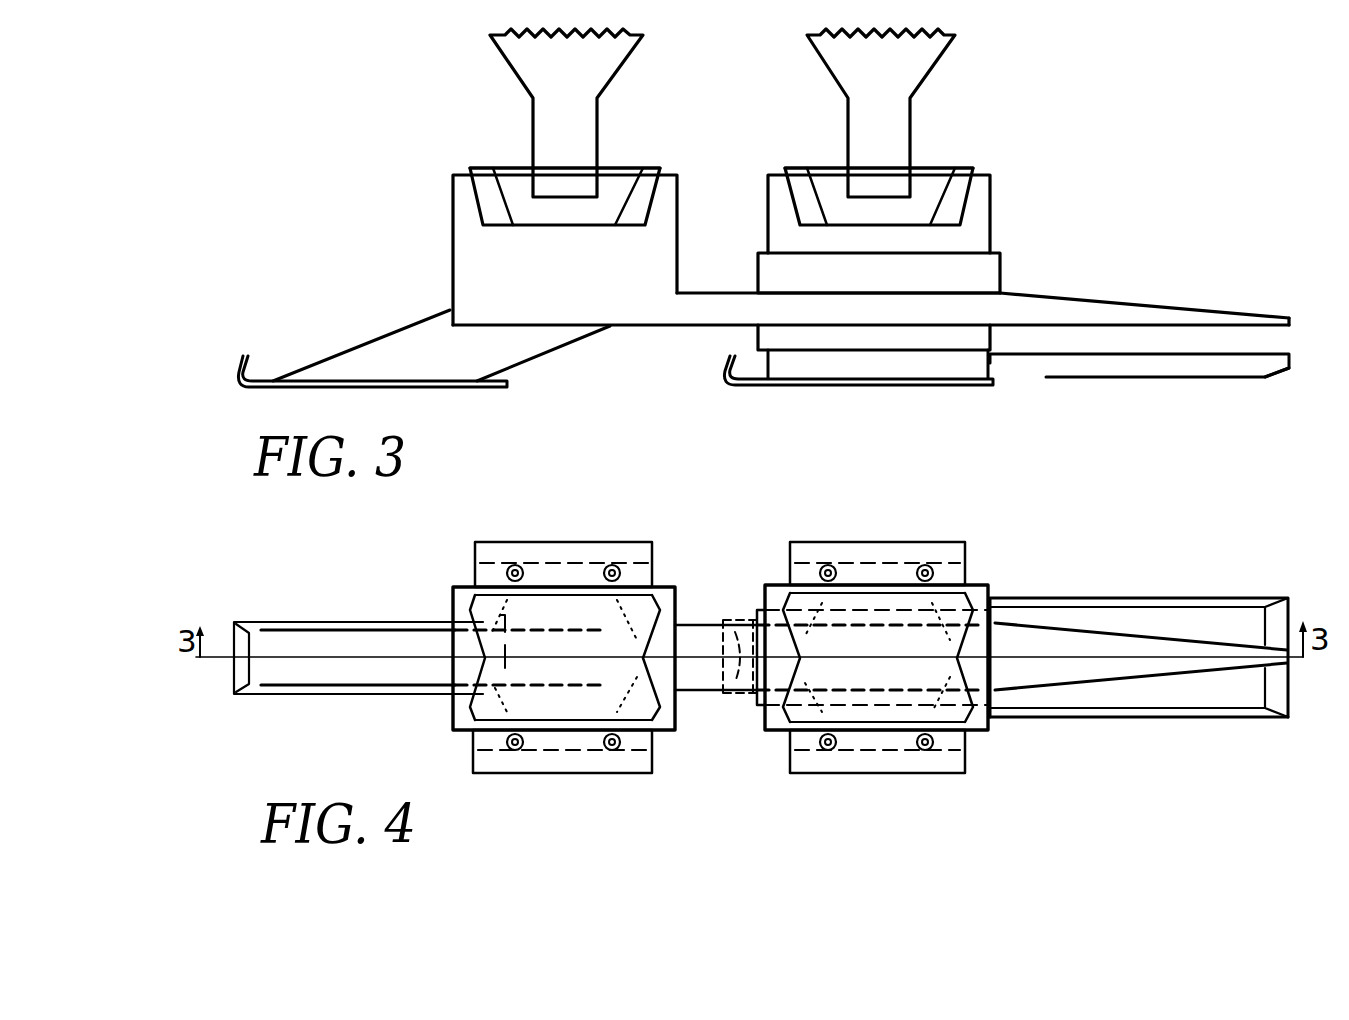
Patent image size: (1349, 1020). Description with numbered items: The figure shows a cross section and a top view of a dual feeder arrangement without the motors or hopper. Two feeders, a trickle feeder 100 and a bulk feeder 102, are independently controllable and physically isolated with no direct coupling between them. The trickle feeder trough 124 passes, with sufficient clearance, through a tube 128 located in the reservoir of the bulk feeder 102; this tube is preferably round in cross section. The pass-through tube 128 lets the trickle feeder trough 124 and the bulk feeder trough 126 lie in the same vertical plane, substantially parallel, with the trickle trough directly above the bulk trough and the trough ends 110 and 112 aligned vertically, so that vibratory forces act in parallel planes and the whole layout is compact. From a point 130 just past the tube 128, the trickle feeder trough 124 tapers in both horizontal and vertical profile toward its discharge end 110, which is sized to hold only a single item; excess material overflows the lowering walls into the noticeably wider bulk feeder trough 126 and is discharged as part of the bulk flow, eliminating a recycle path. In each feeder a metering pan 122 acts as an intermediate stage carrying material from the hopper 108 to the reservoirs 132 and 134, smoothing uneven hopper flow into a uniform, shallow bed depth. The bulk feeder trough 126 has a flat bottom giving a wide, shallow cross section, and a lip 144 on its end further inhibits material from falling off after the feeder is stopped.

In FIG. 3, the trickle feeder 100 is at (452, 220).
In FIG. 3, the bulk feeder 102 is at (996, 199).
In FIG. 3, the hopper 108 is at (499, 53).
In FIG. 3, the discharge end of trickle feeder trough 110 is at (1289, 318).
In FIG. 3, the end of bulk feeder trough 112 is at (1289, 370).
In FIG. 3, the metering pans 122 is at (786, 170).
In FIG. 4, the metering pans 122 is at (790, 543).
In FIG. 3, the trickle feeder trough 124 is at (1098, 300).
In FIG. 4, the trickle feeder trough 124 is at (1087, 628).
In FIG. 3, the bulk feeder trough 126 is at (1046, 380).
In FIG. 4, the bulk feeder trough 126 is at (1127, 717).
In FIG. 3, the tube 128 is at (1000, 265).
In FIG. 4, the tube 128 is at (998, 610).
In FIG. 3, the point 130 is at (1012, 293).
In FIG. 4, the point 130 is at (1010, 623).
In FIG. 3, the reservoir 132 is at (452, 175).
In FIG. 4, the reservoir 132 is at (455, 587).
In FIG. 3, the reservoir 134 is at (992, 170).
In FIG. 4, the reservoir 134 is at (988, 585).
In FIG. 3, the lip 144 is at (1282, 370).